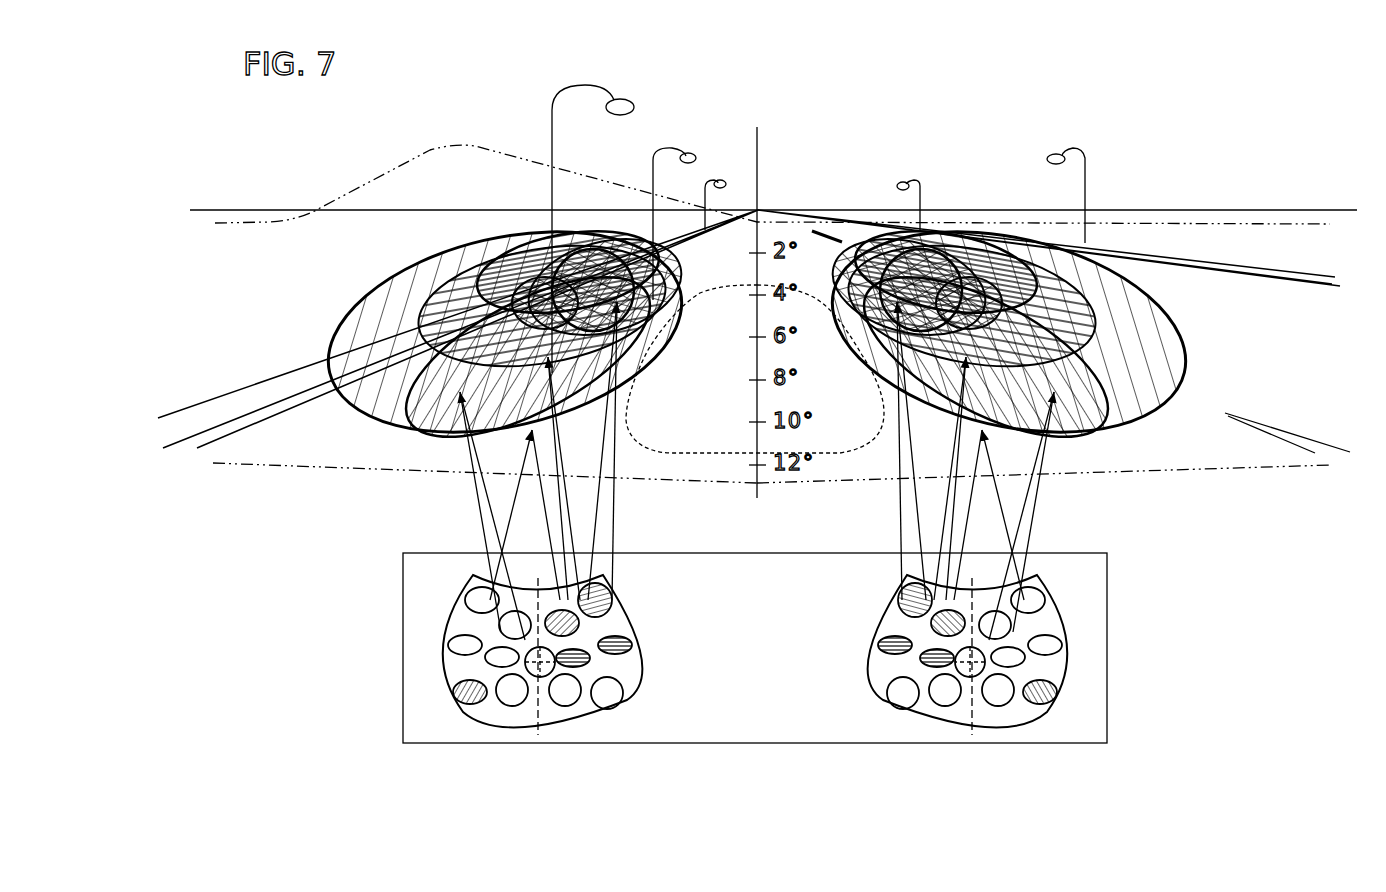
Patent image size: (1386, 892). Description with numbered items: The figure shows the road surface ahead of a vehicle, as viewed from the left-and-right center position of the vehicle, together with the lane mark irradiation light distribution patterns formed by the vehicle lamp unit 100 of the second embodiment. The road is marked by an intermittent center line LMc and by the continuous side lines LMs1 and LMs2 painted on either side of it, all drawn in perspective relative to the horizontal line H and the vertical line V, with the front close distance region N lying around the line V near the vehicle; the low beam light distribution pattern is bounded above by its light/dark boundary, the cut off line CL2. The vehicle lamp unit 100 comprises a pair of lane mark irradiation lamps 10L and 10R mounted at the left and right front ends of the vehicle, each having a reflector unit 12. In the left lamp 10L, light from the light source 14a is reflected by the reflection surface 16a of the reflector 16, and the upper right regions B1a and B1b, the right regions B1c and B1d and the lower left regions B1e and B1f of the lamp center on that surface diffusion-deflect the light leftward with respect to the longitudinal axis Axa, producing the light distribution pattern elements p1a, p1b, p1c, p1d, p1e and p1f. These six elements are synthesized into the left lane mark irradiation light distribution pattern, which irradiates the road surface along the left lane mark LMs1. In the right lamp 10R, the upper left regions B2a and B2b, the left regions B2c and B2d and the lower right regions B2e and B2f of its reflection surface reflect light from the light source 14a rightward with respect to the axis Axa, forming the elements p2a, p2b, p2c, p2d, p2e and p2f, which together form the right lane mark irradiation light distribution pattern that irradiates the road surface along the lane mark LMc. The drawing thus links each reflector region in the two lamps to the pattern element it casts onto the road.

The vehicle lamp unit 100 is at (1190, 608).
The left lane mark irradiation lamp 10L is at (428, 578).
The right lane mark irradiation lamp 10R is at (1082, 578).
The reflector unit 12 is at (438, 617).
The light source 14a is at (759, 645).
The reflector 16 is at (445, 645).
The reflection surface 16a is at (453, 670).
The longitudinal axis Axa is at (538, 710).
The upper right region B1a is at (613, 601).
The upper right region B1b is at (580, 622).
The right region B1c is at (619, 645).
The right region B1d is at (590, 665).
The lower left region B1e is at (453, 703).
The lower left region B1f is at (540, 632).
The upper left region B2a is at (897, 601).
The upper left region B2b is at (930, 622).
The left region B2c is at (891, 645).
The left region B2d is at (920, 665).
The lower right region B2e is at (1057, 703).
The lower right region B2f is at (970, 632).
The light distribution pattern element p1a is at (657, 300).
The light distribution pattern element p1b is at (410, 425).
The light distribution pattern element p1c is at (590, 250).
The light distribution pattern element p1d is at (417, 290).
The light distribution pattern element p1e is at (530, 242).
The light distribution pattern element p1f is at (333, 345).
The light distribution pattern element p2a is at (843, 317).
The light distribution pattern element p2b is at (1105, 430).
The light distribution pattern element p2c is at (850, 243).
The light distribution pattern element p2d is at (1107, 283).
The light distribution pattern element p2e is at (940, 263).
The light distribution pattern element p2f is at (1183, 343).
The horizontal reference line H is at (771, 212).
The line V— V is at (757, 318).
The left side line LMs1 is at (280, 395).
The right side line LMs2 is at (1262, 277).
The center line LMc is at (1272, 423).
The cut-off line CL2 is at (1115, 224).
The front close distance region N is at (820, 460).